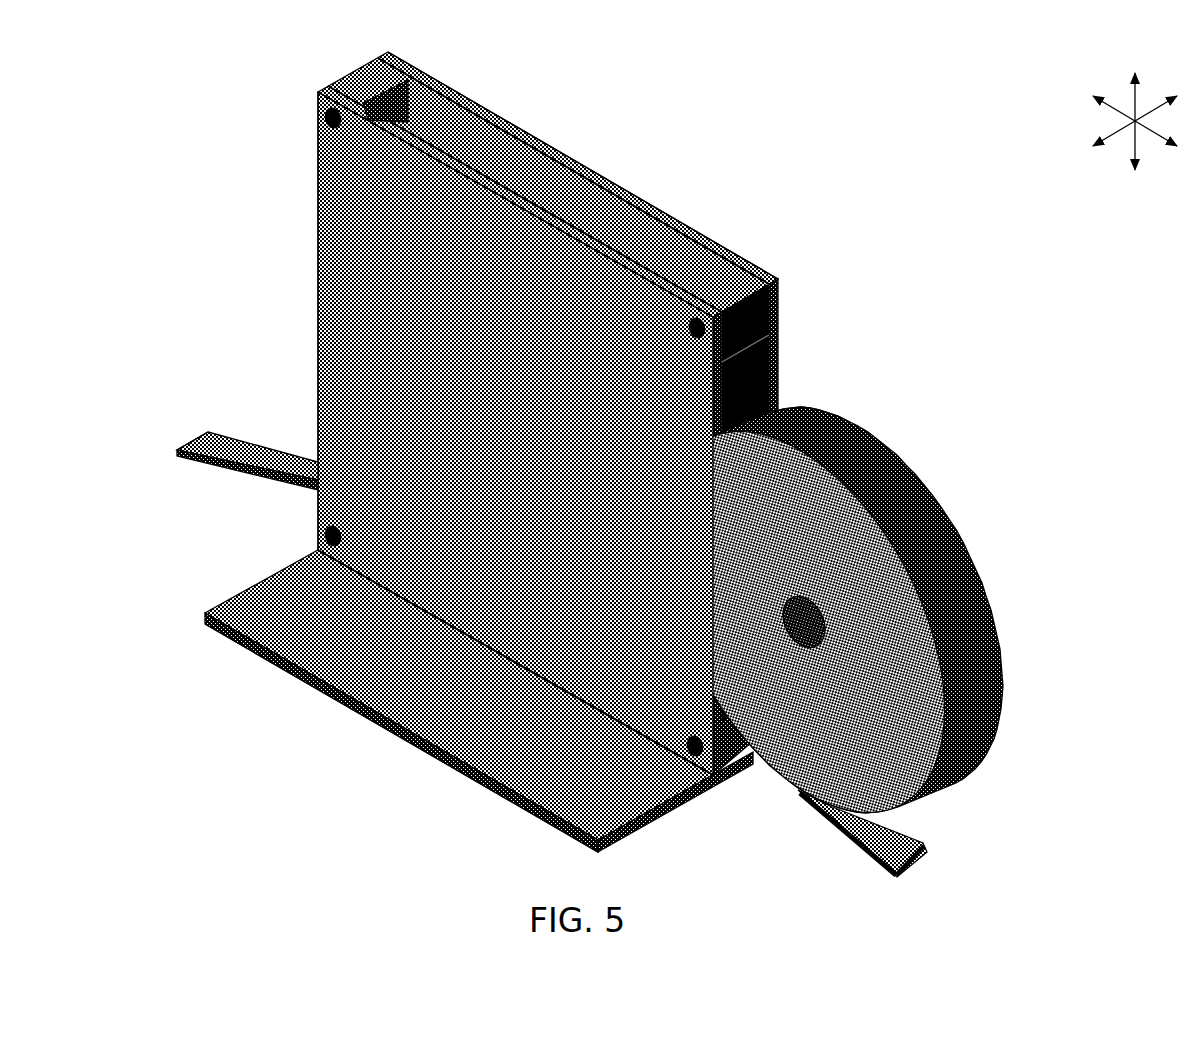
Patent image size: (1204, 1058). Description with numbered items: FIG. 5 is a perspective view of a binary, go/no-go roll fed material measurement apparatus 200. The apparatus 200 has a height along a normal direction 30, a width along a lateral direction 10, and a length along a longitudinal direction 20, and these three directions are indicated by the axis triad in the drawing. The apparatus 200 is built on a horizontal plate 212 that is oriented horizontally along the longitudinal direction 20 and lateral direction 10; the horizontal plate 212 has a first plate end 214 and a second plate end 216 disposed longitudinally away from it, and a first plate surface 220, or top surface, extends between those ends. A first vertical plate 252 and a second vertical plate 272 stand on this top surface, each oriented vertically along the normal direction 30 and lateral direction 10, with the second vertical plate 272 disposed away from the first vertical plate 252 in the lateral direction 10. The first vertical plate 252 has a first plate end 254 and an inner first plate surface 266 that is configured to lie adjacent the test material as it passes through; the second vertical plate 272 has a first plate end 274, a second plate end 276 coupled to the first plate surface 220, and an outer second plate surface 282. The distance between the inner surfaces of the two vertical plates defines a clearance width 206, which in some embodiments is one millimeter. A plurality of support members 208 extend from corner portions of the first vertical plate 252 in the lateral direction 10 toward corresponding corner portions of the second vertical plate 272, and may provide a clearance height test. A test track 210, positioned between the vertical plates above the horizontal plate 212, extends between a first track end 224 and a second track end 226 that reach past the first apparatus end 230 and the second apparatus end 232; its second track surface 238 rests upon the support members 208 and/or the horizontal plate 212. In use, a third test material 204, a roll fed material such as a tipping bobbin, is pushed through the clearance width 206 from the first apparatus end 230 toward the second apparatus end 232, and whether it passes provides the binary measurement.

The roll fed material measurement apparatus 200 is at (246, 70).
The third test material 204 is at (953, 555).
The clearance width 206 is at (378, 14).
The plurality of support members 208 is at (410, 73).
The test track 210 is at (913, 826).
The horizontal plate 212 is at (243, 649).
The first plate end 214 is at (256, 581).
The second plate end 216 is at (660, 824).
The first plate surface 220 is at (365, 671).
The first track end 224 is at (196, 432).
The second track end 226 is at (918, 852).
The first apparatus end 230 is at (226, 447).
The second apparatus end 232 is at (823, 397).
The second track surface 238 is at (242, 476).
The first vertical plate 252 is at (705, 233).
The first plate end 254 is at (569, 149).
The first plate surface 266 is at (630, 216).
The second vertical plate 272 is at (343, 236).
The first plate end 274 is at (462, 157).
The second plate end 276 is at (514, 663).
The second plate surface 282 is at (330, 325).
The lateral direction 10 is at (1148, 110).
The longitudinal direction 20 is at (1148, 128).
The normal direction 30 is at (1136, 109).